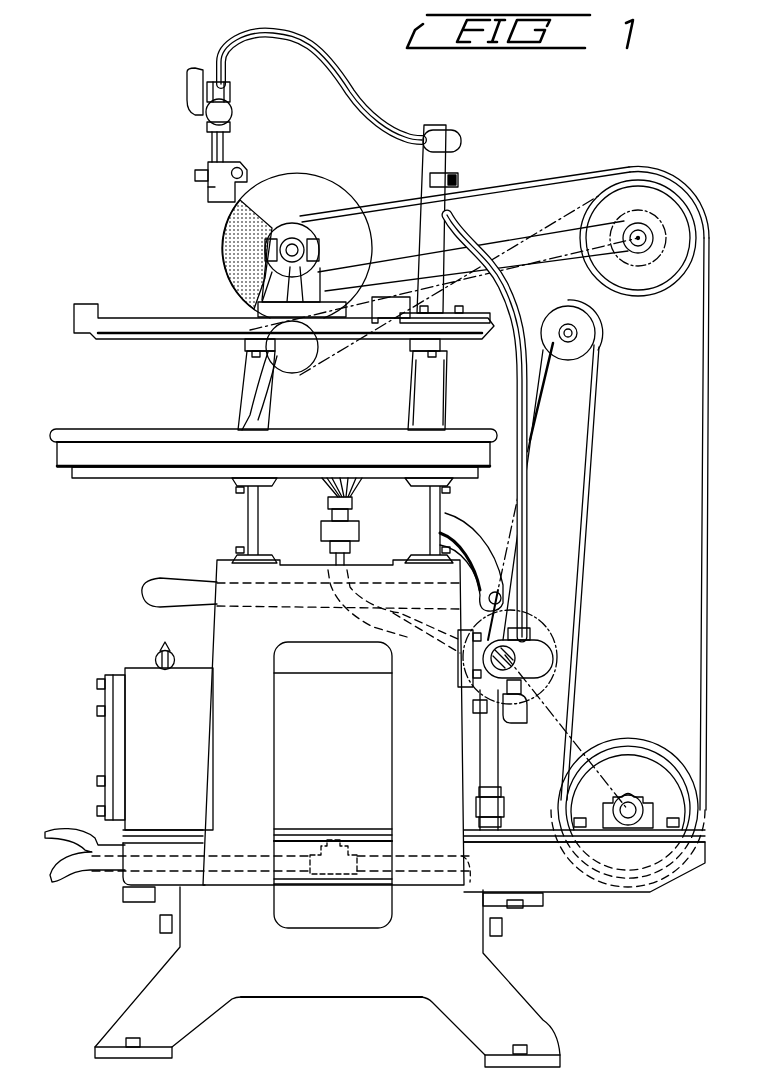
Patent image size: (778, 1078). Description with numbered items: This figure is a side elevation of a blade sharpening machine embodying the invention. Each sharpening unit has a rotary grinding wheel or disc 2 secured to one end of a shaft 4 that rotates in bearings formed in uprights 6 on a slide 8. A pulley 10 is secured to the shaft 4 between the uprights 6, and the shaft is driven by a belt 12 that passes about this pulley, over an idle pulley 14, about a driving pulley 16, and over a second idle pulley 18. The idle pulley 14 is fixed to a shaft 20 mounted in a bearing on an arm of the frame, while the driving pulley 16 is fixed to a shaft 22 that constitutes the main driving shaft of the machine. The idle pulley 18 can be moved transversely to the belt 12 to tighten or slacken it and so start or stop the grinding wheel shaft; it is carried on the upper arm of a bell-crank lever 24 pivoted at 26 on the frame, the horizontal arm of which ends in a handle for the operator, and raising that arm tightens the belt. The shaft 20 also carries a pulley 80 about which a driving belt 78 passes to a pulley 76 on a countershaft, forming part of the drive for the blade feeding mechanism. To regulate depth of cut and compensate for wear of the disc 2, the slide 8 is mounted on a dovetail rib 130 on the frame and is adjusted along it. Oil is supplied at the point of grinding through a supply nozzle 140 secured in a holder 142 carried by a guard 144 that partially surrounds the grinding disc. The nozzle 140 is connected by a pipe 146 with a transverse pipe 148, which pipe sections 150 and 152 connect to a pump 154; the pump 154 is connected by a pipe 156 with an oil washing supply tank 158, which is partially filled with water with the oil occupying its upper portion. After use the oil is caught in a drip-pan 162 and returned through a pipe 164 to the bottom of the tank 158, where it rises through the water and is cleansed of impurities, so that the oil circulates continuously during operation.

The rotary grinding wheel 2 is at (222, 242).
The shaft 4 is at (300, 256).
The uprights 6 is at (264, 276).
The slide 8 is at (378, 318).
The pulley 10 is at (284, 230).
The belt 12 is at (392, 210).
The idle pulley 14 is at (682, 205).
The driving pulley 16 is at (650, 752).
The second idle pulley 18 is at (590, 329).
The shaft 20 is at (648, 236).
The shaft 22 is at (632, 806).
The bell-crank lever 24 is at (560, 415).
The pivot 26 is at (502, 598).
The pulley 76 is at (305, 360).
The driving belt 78 is at (510, 250).
The pulley 80 is at (636, 212).
The dovetail rib 130 is at (378, 340).
The supply nozzle 140 is at (225, 148).
The holder 142 is at (208, 195).
The guard 144 is at (326, 184).
The pipe 146 is at (362, 104).
The transverse pipe 148 is at (448, 132).
The pipe section 150 is at (458, 165).
The pipe section 152 is at (530, 542).
The pump 154 is at (540, 654).
The pipe 156 is at (522, 707).
The oil washing supply tank 158 is at (145, 737).
The drip-pan 162 is at (162, 430).
The pipe 164 is at (400, 637).